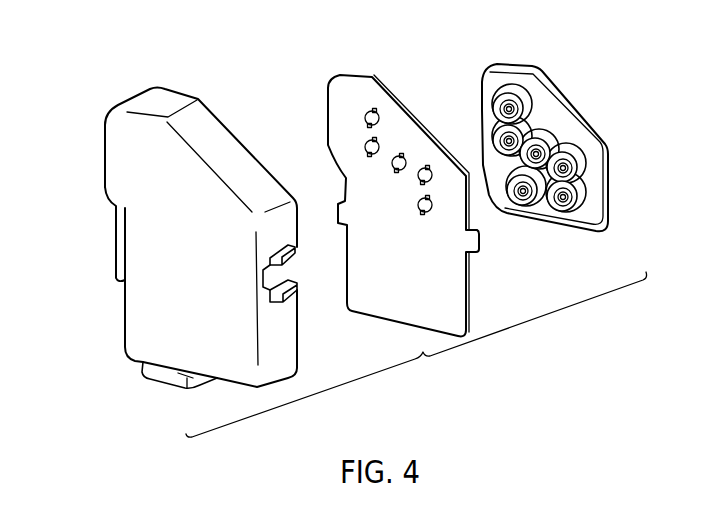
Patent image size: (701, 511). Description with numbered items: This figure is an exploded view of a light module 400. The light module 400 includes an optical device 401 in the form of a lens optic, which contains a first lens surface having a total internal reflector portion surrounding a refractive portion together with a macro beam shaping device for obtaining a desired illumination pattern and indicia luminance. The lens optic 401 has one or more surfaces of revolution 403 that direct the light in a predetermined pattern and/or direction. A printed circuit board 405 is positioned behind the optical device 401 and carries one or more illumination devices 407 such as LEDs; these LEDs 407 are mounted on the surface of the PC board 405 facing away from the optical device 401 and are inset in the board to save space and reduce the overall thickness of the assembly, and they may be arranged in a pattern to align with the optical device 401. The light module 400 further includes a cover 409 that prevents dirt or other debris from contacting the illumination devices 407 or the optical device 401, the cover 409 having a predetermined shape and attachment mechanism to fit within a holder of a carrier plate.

The light module 400 is at (416, 354).
The optical device 401 is at (518, 126).
The surfaces of revolution 403 is at (500, 140).
The printed circuit board 405 is at (376, 195).
The illumination devices 407 is at (365, 150).
The cover 409 is at (122, 155).